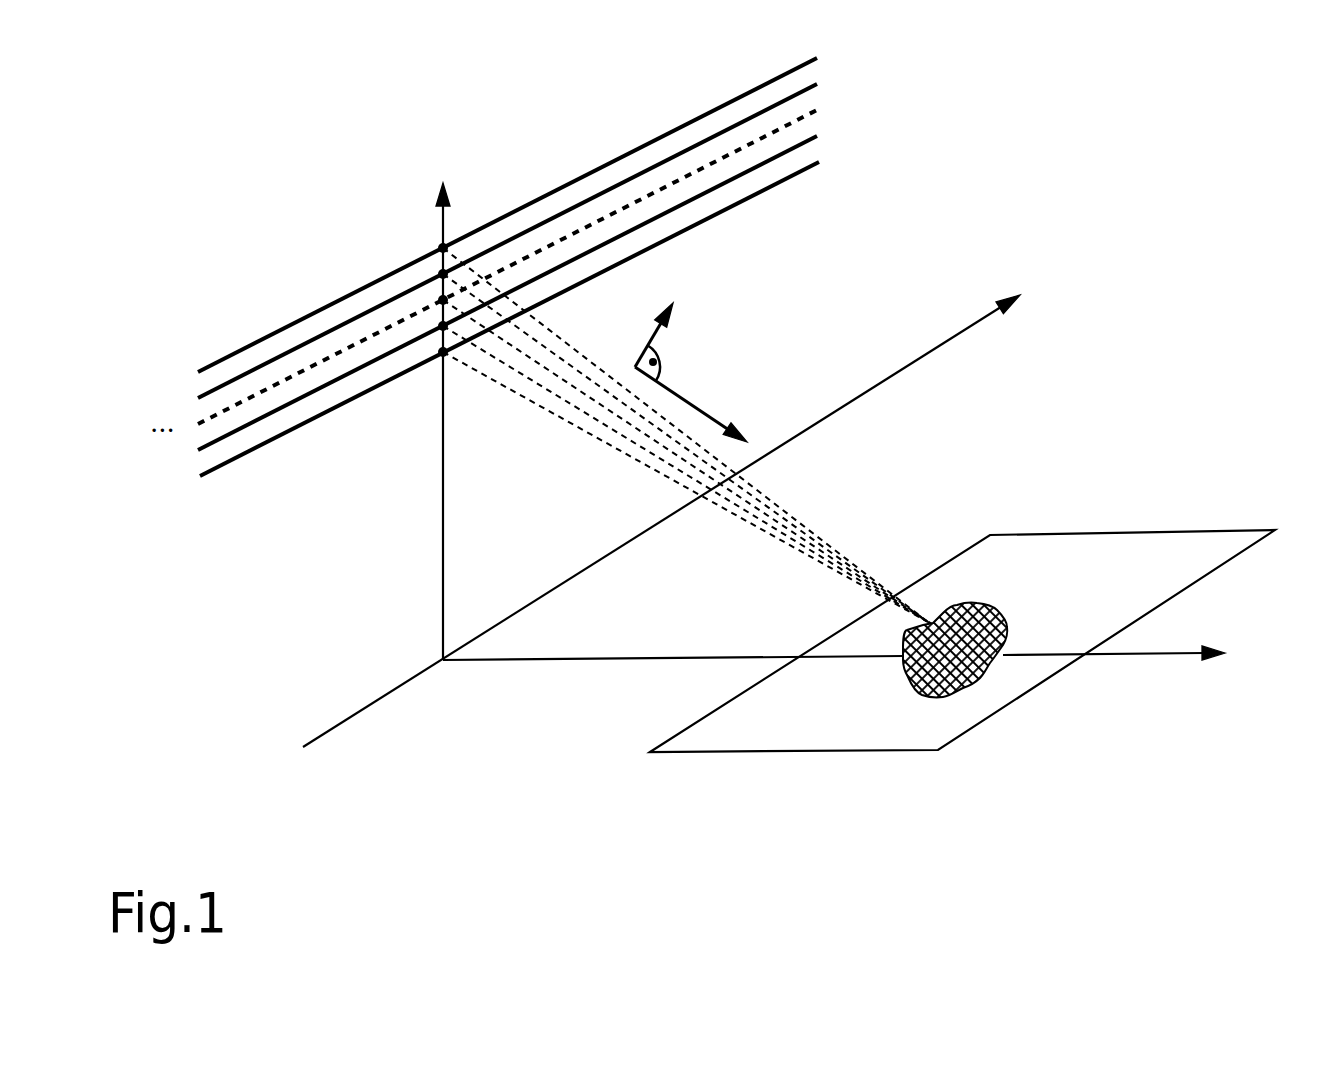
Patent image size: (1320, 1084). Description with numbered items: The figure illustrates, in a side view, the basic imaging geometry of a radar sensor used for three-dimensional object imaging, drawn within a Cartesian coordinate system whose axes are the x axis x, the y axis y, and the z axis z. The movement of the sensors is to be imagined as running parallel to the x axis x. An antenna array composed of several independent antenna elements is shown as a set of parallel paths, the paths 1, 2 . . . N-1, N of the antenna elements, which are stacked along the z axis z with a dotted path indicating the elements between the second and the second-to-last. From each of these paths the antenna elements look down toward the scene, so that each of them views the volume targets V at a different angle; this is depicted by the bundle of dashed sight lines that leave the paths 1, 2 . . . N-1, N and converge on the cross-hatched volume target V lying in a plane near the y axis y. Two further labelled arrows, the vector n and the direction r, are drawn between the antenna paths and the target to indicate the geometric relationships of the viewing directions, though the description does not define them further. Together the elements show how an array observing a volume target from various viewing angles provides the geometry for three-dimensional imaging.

The path of the first antenna element 1 is at (486, 224).
The path of the second antenna element 2 is at (486, 251).
The path of the (N-1)th antenna element N-1 is at (468, 304).
The path of the Nth antenna element N is at (484, 334).
The z axis z is at (440, 404).
The x axis x is at (675, 511).
The y axis y is at (857, 658).
The normal vector n is at (691, 356).
The ray direction vector r is at (696, 442).
The volume targets V is at (962, 660).